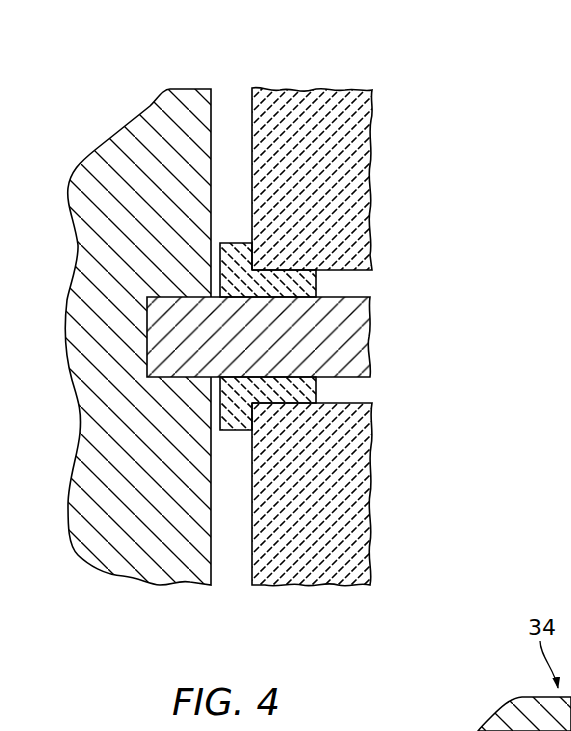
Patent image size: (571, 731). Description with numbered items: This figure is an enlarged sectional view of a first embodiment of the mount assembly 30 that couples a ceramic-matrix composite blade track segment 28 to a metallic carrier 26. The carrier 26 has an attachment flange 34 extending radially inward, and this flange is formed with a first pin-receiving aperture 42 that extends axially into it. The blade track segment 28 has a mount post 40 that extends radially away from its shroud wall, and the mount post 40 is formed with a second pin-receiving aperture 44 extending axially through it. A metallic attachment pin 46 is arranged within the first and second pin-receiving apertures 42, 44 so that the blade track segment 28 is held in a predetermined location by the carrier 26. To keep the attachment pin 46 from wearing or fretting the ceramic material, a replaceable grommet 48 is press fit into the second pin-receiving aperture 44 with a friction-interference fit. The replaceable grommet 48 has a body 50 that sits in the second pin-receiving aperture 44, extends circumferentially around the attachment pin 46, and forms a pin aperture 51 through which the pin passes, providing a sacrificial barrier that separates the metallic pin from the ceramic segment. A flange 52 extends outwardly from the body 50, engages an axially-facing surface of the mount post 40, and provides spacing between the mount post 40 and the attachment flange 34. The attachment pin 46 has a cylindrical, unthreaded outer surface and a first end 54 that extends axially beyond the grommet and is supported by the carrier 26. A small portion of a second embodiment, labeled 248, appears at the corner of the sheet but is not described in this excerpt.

The carrier 26 is at (185, 80).
The blade track segment 28 is at (246, 565).
The mount assembly 30 is at (291, 268).
The attachment flange 34 is at (141, 296).
The mount post 40 is at (300, 80).
The first pin-receiving aperture 42 is at (279, 321).
The second pin-receiving aperture 44 is at (372, 285).
The attachment pin 46 is at (380, 338).
The replaceable grommet 48 is at (326, 159).
The body 50 is at (292, 444).
The pin aperture 51 is at (327, 382).
The flange 52 is at (292, 440).
The first end 54 is at (218, 403).
The seal (alternate embodiment) 248 is at (463, 730).